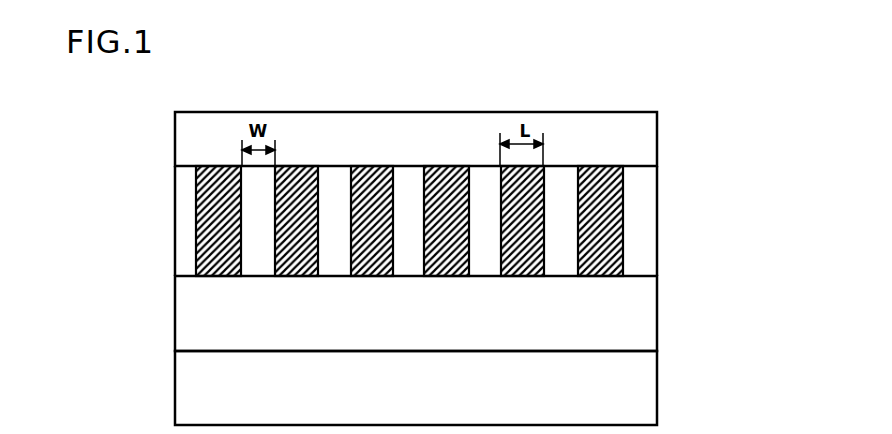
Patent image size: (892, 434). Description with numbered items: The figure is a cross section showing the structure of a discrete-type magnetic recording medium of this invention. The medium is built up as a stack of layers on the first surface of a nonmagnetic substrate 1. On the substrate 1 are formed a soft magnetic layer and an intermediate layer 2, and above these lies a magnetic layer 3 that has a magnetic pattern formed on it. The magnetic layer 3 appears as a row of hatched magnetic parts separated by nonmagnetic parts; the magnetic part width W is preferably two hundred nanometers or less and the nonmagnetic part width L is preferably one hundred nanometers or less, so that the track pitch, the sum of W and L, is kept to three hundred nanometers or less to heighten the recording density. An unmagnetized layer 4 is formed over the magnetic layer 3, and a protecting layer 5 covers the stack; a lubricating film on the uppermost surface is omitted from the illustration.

The nonmagnetic substrate 1 is at (416, 388).
The intermediate layer 2 is at (416, 313).
The magnetic layer 3 is at (187, 233).
The unmagnetized layer 4 is at (600, 220).
The protecting layer 5 is at (416, 139).